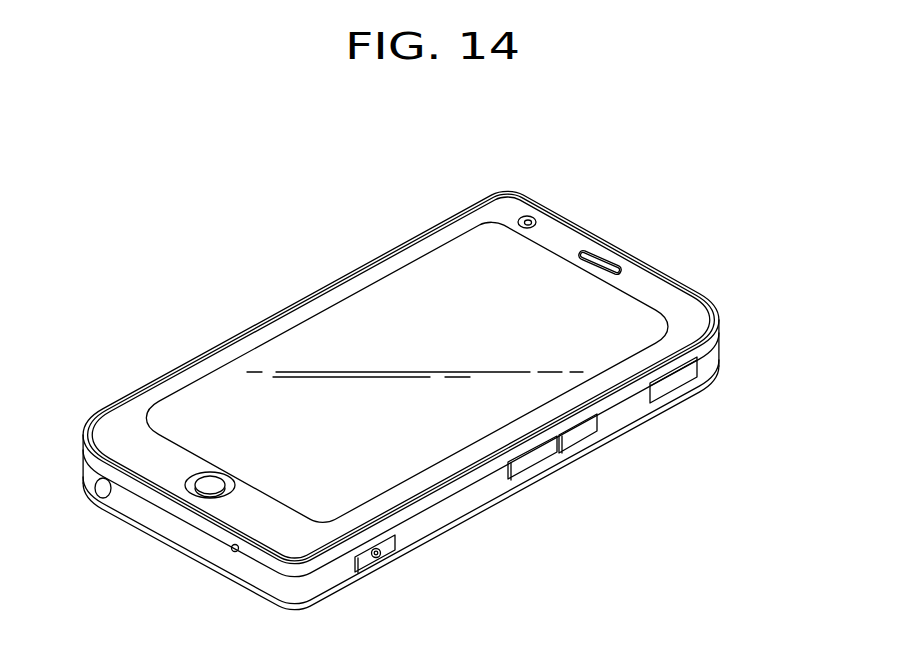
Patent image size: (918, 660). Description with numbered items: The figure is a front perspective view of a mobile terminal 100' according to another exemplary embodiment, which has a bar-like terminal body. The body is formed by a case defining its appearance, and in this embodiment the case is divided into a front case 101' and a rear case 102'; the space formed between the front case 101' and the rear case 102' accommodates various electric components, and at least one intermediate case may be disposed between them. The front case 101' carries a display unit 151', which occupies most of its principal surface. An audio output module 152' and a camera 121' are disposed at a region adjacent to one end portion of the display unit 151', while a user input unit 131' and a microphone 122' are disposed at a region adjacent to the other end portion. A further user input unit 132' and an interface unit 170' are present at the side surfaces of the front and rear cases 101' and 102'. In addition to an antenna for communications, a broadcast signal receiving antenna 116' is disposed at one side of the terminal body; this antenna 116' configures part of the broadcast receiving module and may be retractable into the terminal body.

The mobile terminal 100' is at (401, 375).
The front case 101' is at (434, 444).
The rear case 102' is at (434, 478).
The display unit 151' is at (407, 372).
The user input unit 131' is at (149, 427).
The camera 121' is at (565, 191).
The audio output module 152' is at (631, 234).
The interface unit 170' is at (699, 399).
The user input unit 132' is at (558, 470).
The broadcast signal receiving antenna 116' is at (69, 513).
The microphone 122' is at (196, 581).